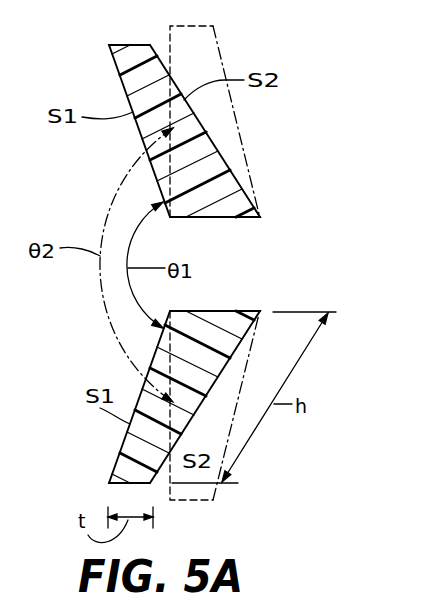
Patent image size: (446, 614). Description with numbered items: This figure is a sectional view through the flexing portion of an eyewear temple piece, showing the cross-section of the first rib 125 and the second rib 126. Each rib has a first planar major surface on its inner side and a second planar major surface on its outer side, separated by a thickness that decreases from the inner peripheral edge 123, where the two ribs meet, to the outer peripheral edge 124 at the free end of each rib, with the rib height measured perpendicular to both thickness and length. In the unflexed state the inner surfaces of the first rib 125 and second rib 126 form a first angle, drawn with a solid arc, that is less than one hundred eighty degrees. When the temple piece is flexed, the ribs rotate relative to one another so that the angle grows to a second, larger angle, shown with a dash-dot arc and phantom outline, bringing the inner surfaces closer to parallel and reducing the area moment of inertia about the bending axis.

The inner peripheral edge 123 is at (223, 219).
The outer peripheral edge 124 is at (142, 44).
The first rib 125 is at (203, 162).
The second rib 126 is at (137, 448).